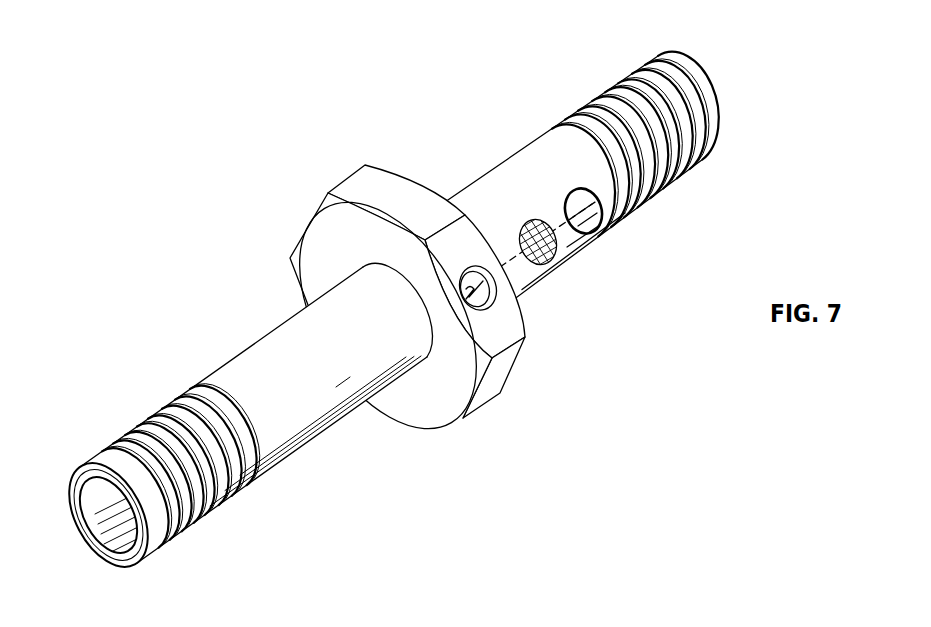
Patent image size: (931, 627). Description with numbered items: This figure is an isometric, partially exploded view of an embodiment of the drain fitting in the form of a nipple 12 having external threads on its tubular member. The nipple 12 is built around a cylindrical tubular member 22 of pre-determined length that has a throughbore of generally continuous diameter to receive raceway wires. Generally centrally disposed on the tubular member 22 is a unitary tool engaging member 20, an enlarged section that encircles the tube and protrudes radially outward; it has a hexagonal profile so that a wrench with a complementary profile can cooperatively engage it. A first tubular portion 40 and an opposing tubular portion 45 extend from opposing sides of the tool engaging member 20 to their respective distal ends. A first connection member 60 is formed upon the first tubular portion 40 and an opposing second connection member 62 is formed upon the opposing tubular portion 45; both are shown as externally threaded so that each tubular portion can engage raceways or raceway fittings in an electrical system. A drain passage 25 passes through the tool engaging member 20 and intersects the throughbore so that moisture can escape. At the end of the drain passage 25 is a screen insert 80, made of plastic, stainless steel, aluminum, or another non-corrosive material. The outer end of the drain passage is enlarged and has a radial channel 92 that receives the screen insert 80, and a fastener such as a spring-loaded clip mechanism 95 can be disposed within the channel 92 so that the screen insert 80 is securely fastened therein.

The nipple 12 is at (149, 115).
The tool engaging member 20 is at (429, 270).
The cylindrical tubular member 22 is at (161, 376).
The drain passage 25 is at (493, 303).
The first tubular portion 40 is at (287, 393).
The opposing tubular portion 45 is at (488, 200).
The first connection member 60 is at (103, 523).
The second connection member 62 is at (690, 120).
The screen insert 80 is at (572, 257).
The radial channel 92 is at (481, 277).
The spring-loaded clip mechanism 95 is at (610, 213).